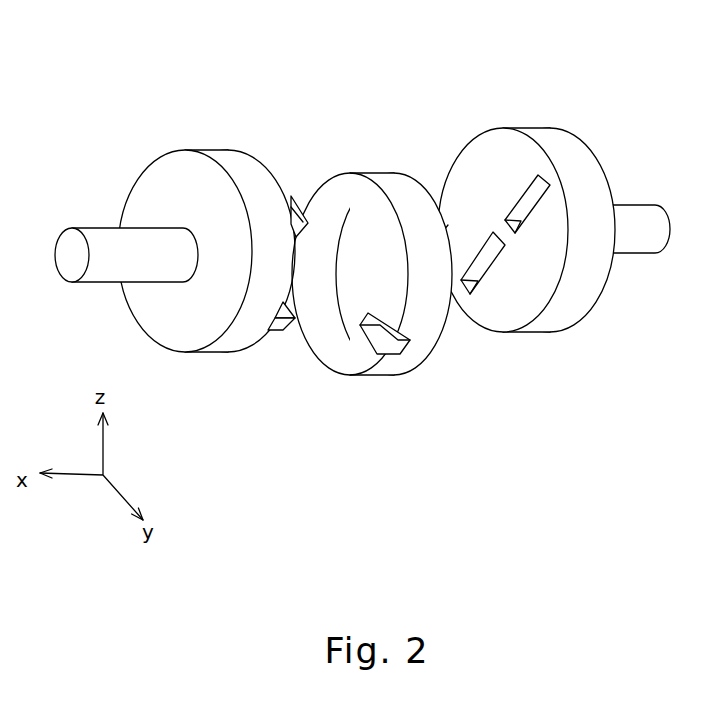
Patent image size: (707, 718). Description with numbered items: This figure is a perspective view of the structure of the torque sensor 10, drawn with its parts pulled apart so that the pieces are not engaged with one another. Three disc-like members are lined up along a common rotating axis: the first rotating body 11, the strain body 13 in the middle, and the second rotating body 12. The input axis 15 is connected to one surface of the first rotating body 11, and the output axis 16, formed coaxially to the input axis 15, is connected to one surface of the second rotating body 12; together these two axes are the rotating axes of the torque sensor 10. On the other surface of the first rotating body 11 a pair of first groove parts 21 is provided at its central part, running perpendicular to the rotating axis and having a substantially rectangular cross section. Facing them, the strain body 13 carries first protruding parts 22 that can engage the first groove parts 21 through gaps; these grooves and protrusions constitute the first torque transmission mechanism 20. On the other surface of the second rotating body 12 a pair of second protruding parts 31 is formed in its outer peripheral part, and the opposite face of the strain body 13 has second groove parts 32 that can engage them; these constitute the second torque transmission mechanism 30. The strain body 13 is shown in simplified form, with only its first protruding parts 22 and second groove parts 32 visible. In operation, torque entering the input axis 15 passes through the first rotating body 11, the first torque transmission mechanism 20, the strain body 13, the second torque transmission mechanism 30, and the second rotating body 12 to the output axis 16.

The torque sensor 10 is at (362, 259).
The first rotating body 11 is at (495, 320).
The second rotating body 12 is at (175, 162).
The strain body 13 is at (337, 180).
The input axis 15 is at (637, 248).
The output axis 16 is at (95, 283).
The first torque transmission mechanism 20 is at (519, 214).
The first groove parts 21 is at (543, 177).
The first protruding parts 22 is at (433, 183).
The second torque transmission mechanism 30 is at (353, 287).
The second protruding parts 31 is at (272, 332).
The second groove parts 32 is at (407, 361).